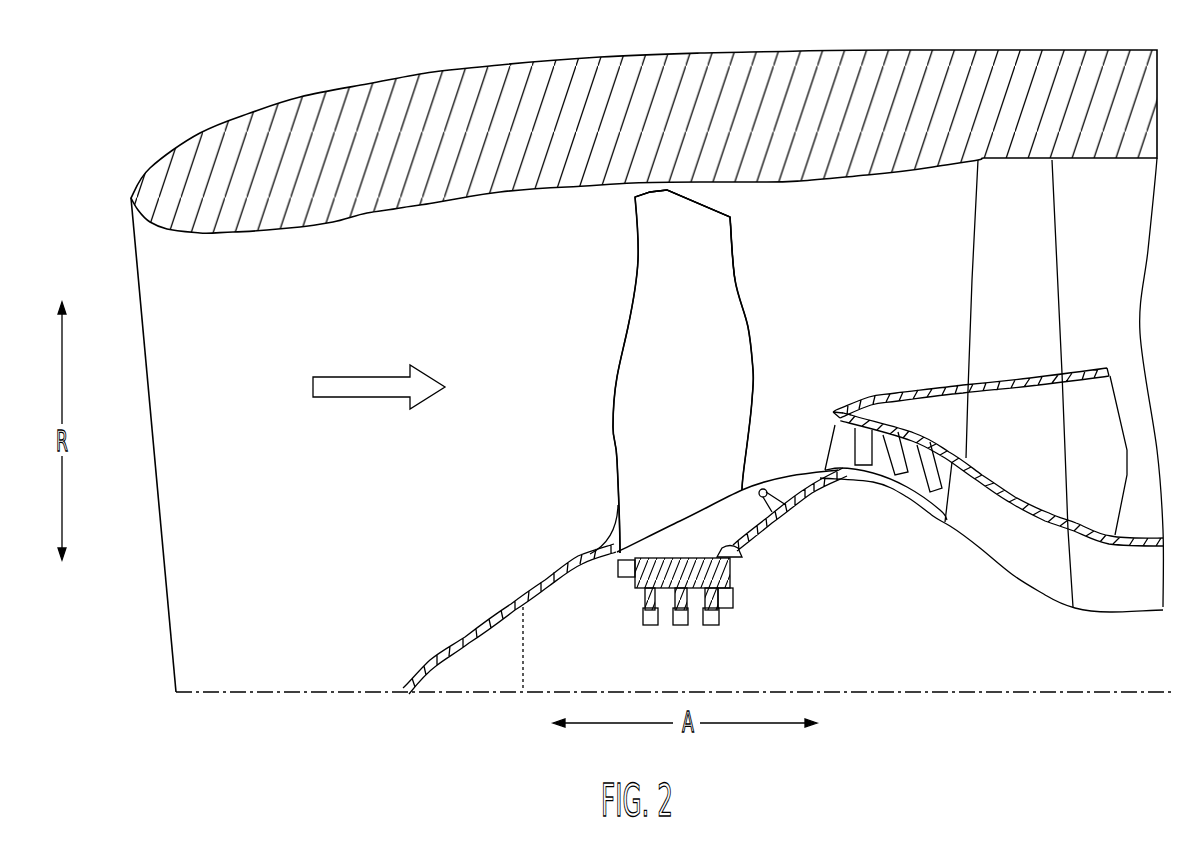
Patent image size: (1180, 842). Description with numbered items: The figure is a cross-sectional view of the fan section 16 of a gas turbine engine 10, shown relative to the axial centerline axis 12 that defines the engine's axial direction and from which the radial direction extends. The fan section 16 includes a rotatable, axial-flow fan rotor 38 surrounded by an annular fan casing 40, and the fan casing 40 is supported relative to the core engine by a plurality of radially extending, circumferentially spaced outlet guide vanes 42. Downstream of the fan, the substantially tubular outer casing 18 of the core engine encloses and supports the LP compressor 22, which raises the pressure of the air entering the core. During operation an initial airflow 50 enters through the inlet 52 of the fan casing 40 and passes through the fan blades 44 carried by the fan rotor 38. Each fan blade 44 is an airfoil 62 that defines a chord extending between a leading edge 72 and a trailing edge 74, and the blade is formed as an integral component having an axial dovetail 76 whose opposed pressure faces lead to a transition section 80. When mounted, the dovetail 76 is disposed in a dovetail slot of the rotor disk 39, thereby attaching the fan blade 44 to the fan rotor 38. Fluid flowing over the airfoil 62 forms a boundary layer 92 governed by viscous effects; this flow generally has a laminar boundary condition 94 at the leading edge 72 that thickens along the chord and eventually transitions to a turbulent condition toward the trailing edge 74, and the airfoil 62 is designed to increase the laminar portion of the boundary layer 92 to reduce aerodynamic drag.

The gas turbine engine 10 is at (203, 113).
The axial centerline axis 12 is at (603, 690).
The fan section 16 is at (589, 279).
The outer casing 18 is at (933, 387).
The LP compressor 22 is at (873, 482).
The fan rotor 38 is at (690, 633).
The rotor disk 39 is at (643, 613).
The fan casing 40 is at (652, 73).
The outlet guide vanes 42 is at (1054, 272).
The fan blade 44 is at (720, 282).
The airflow 50 is at (347, 398).
The inlet 52 is at (136, 283).
The airfoil 62 is at (623, 382).
The leading edge 72 is at (611, 437).
The trailing edge 74 is at (757, 399).
The axial dovetail 76 is at (621, 550).
The transition section 80 is at (650, 524).
The boundary layer 92 is at (735, 337).
The laminar boundary condition 94 is at (645, 210).